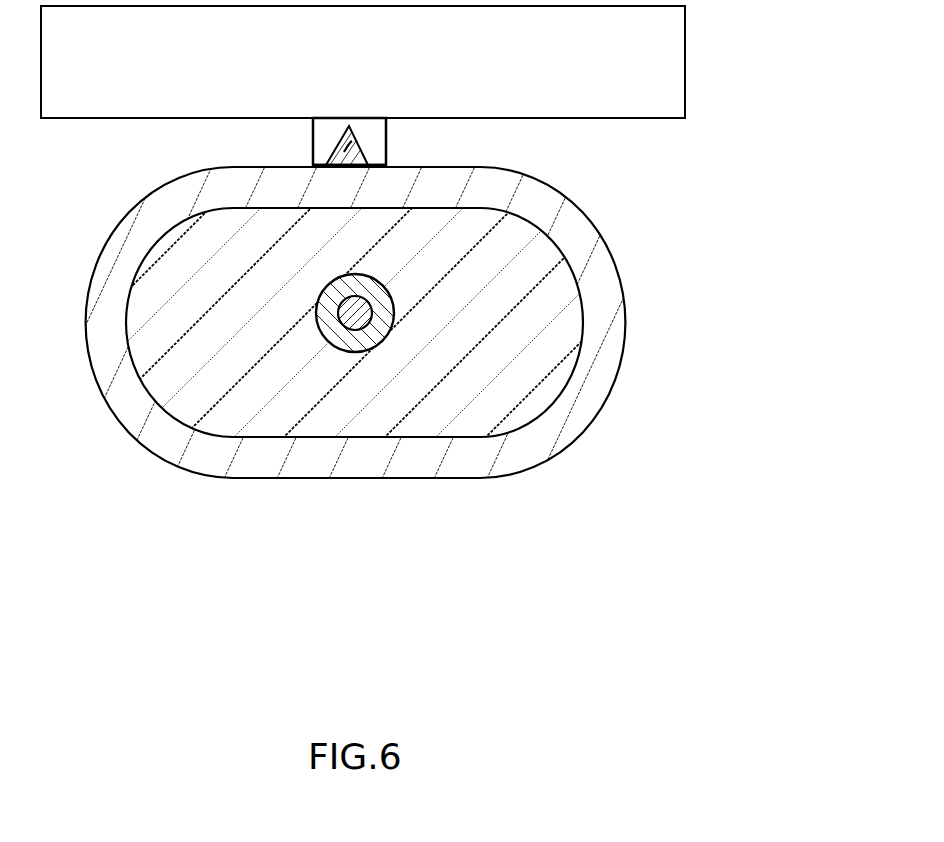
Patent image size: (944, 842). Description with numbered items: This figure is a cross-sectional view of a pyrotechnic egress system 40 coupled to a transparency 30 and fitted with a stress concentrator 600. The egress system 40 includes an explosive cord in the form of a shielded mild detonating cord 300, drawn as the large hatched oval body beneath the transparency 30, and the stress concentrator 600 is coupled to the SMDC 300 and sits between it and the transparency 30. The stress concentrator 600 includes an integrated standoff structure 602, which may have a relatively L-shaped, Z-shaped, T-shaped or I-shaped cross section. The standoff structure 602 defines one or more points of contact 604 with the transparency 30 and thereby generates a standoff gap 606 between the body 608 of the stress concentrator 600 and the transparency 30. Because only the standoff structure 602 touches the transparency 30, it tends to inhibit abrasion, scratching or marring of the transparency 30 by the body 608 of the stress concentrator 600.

The transparency 30 is at (579, 63).
The pyrotechnic egress system 40 is at (708, 131).
The shielded mild detonating cord 300 is at (657, 404).
The stress concentrator 600 is at (363, 126).
The standoff structure 602 is at (313, 145).
The point of contact 604 is at (279, 118).
The standoff gap 606 is at (357, 115).
The body 608 is at (345, 166).